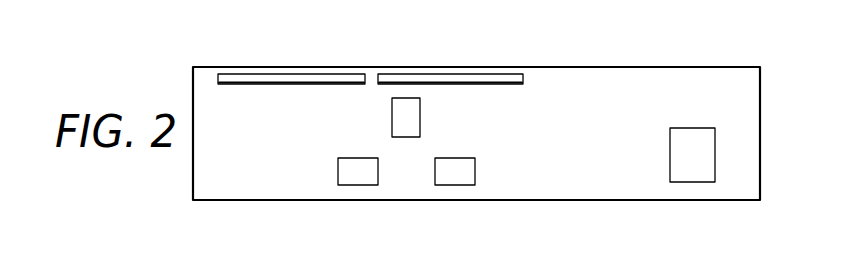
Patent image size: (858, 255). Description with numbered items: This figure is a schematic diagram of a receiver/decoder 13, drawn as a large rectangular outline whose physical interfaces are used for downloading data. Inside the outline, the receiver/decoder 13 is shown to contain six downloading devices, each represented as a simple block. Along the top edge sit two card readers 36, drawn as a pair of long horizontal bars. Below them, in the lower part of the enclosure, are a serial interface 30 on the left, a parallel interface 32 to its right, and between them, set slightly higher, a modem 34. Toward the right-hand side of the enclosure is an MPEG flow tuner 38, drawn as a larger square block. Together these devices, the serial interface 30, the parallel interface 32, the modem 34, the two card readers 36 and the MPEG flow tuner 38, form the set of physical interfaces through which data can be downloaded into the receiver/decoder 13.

The receiver/decoder 13 is at (762, 125).
The serial interface 30 is at (338, 172).
The parallel interface 32 is at (476, 168).
The modem 34 is at (405, 138).
The card readers 36 is at (242, 85).
The MPEG flow tuner 38 is at (687, 128).